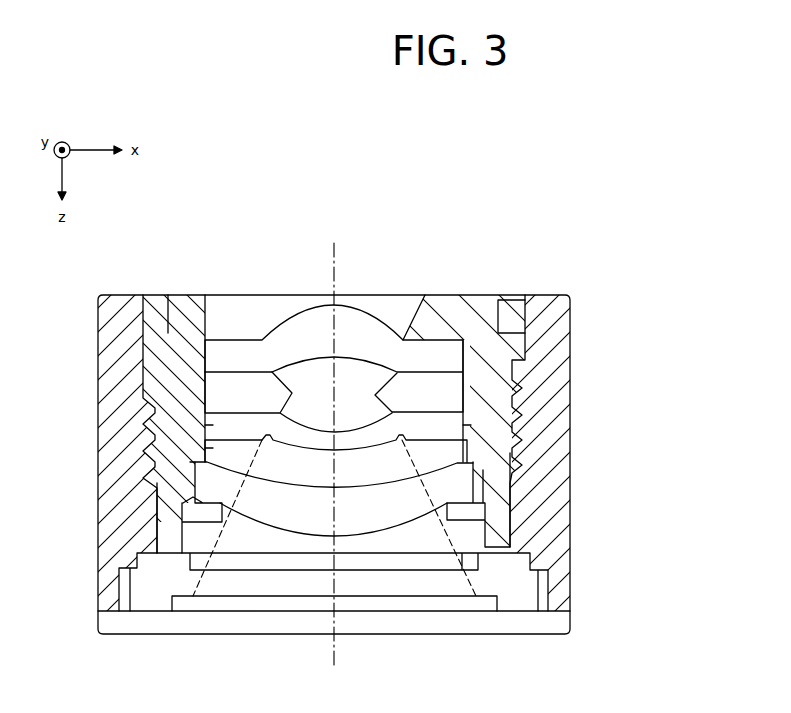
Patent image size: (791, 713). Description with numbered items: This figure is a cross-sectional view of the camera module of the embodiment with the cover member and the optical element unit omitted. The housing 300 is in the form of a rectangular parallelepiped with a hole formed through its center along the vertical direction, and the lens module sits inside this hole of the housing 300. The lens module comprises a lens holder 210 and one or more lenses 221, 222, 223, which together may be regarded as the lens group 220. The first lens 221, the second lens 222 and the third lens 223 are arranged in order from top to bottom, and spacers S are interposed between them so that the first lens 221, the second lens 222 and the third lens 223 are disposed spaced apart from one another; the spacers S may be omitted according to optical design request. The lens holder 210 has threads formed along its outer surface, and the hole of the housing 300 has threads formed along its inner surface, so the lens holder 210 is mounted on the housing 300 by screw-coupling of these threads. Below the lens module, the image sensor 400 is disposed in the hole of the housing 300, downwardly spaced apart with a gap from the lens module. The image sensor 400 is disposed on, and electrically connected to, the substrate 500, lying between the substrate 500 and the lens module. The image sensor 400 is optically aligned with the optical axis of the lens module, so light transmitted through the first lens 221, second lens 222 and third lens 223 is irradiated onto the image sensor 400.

The lens holder 210 is at (490, 353).
The lens group 220 is at (380, 298).
The first lens 221 is at (291, 306).
The second lens 222 is at (205, 421).
The third lens 223 is at (200, 472).
The spacers S is at (205, 384).
The housing 300 is at (567, 384).
The image sensor 400 is at (492, 600).
The substrate 500 is at (545, 628).